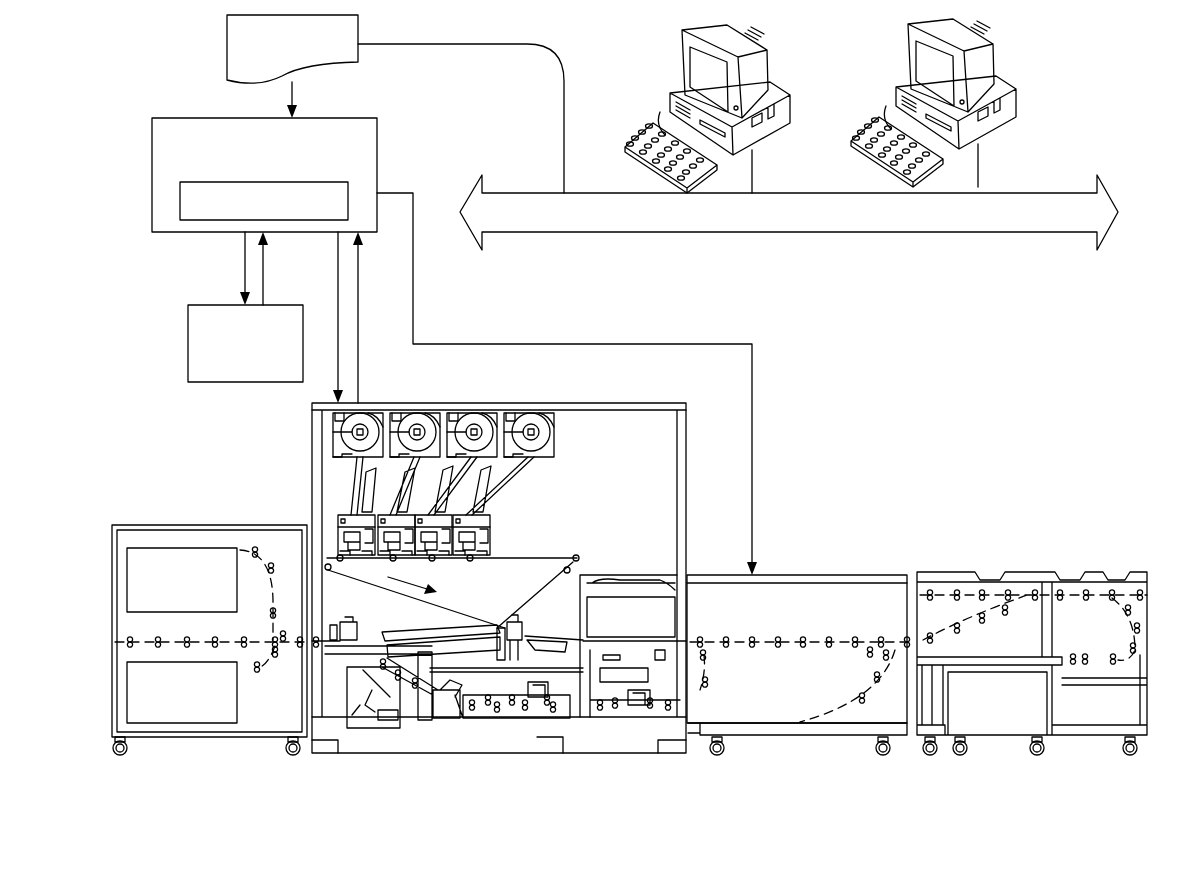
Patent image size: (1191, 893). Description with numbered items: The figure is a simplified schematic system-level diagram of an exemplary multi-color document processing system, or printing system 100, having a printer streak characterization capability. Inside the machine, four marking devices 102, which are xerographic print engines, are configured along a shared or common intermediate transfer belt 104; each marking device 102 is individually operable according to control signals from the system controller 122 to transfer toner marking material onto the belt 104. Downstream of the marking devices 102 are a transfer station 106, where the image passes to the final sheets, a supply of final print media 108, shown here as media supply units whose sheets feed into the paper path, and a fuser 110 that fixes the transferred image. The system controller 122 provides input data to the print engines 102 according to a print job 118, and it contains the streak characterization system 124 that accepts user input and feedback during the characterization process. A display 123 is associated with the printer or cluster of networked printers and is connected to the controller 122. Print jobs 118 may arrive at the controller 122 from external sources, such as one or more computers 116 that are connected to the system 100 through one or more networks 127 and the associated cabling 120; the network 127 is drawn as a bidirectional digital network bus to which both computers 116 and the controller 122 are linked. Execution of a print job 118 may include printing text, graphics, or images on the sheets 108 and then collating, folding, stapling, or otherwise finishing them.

The printing system 100 is at (130, 58).
The marking devices 102 is at (522, 536).
The intermediate transfer belt 104 is at (387, 588).
The transfer station 106 is at (504, 603).
The print media supply 108 is at (127, 583).
The fuser 110 is at (677, 616).
The computers 116 is at (772, 60).
The print job 118 is at (358, 27).
The cabling 120 is at (564, 158).
The system controller 122 is at (423, 346).
The display 123 is at (188, 345).
The streak characterization system 124 is at (214, 182).
The network 127 is at (800, 233).